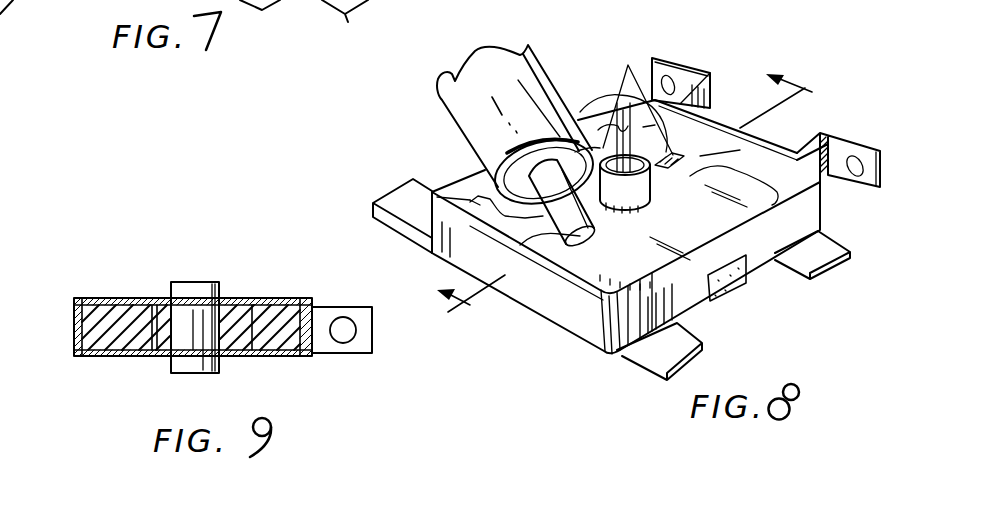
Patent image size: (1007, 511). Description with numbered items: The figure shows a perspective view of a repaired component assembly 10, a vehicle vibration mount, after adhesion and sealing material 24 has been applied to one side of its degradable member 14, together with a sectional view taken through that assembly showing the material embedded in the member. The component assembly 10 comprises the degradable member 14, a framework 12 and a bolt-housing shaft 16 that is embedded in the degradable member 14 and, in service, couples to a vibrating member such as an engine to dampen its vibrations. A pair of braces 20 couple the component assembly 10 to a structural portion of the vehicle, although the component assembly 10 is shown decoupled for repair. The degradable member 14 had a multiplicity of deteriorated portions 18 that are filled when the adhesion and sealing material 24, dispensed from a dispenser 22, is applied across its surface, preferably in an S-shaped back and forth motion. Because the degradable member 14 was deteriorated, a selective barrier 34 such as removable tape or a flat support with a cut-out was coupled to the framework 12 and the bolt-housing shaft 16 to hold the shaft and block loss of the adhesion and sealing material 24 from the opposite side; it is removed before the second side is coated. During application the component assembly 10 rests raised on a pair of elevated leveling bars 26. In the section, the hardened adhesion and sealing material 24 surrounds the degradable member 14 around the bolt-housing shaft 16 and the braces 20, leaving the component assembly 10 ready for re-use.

In FIG. 8, the component assembly 10 is at (838, 212).
In FIG. 9, the component assembly 10 is at (392, 348).
In FIG. 8, the framework 12 is at (540, 305).
In FIG. 9, the framework 12 is at (83, 298).
In FIG. 8, the degradable member 14 is at (482, 173).
In FIG. 9, the degradable member 14 is at (138, 302).
In FIG. 8, the bolt-housing shaft 16 is at (618, 132).
In FIG. 9, the bolt-housing shaft 16 is at (197, 280).
In FIG. 8, the deteriorated portions 18 is at (622, 75).
In FIG. 8, the braces 20 is at (667, 62).
In FIG. 9, the braces 20 is at (338, 350).
In FIG. 8, the dispenser 22 is at (448, 114).
In FIG. 8, the adhesion and sealing material 24 is at (613, 300).
In FIG. 9, the adhesion and sealing material 24 is at (237, 298).
In FIG. 8, the leveling bars 26 is at (827, 282).
In FIG. 8, the selective barrier 34 is at (727, 293).